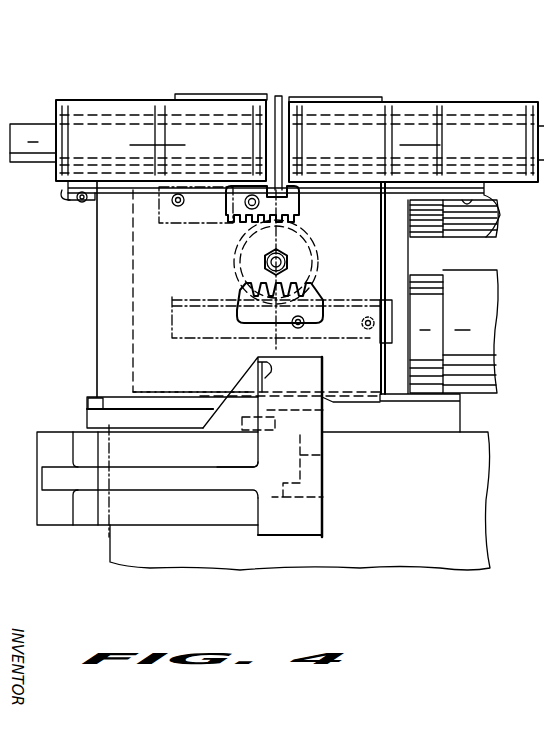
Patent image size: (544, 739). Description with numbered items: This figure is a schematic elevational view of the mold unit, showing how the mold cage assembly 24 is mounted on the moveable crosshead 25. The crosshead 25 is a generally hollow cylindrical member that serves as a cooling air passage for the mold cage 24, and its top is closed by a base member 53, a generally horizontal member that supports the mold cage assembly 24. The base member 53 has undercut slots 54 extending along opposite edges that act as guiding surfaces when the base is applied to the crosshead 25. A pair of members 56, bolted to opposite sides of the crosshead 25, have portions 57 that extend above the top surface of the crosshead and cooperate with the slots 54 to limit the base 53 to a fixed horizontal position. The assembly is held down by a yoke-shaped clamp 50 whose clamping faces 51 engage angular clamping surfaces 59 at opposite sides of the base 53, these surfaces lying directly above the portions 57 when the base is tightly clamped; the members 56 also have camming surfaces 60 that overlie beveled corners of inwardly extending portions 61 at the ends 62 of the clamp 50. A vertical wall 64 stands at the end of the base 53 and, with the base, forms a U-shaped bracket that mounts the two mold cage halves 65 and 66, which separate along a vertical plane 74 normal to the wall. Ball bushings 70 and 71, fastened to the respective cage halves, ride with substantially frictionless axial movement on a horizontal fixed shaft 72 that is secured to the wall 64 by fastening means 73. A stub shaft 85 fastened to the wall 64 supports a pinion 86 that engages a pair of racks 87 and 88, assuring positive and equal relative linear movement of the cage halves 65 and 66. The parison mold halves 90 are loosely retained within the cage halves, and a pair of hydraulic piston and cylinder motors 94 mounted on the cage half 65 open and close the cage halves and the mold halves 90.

The mold cage assembly 24 is at (289, 86).
The moveable crosshead 25 is at (405, 548).
The yoke-shaped clamp 50 is at (45, 450).
The clamping faces 51 is at (285, 393).
The base member 53 is at (103, 403).
The undercut slots 54 is at (100, 417).
The members 56 is at (320, 456).
The portions 57 is at (272, 418).
The angular clamping surfaces 59 is at (258, 362).
The camming surfaces 60 is at (266, 500).
The inwardly extending portions 61 is at (296, 500).
The ends 62 is at (323, 466).
The vertical wall 64 is at (110, 342).
The mold cage half 65 is at (398, 255).
The mold cage half 66 is at (133, 277).
The ball bushing 70 is at (481, 107).
The ball bushing 71 is at (122, 107).
The fixed shaft 72 is at (25, 128).
The fastening means 73 is at (80, 194).
The vertical plane 74 is at (290, 100).
The stub shaft 85 is at (264, 266).
The pinion 86 is at (233, 257).
The rack 87 is at (172, 318).
The rack 88 is at (160, 213).
The parison mold halves 90 is at (229, 94).
The hydraulic piston and cylinder motors 94 is at (493, 228).